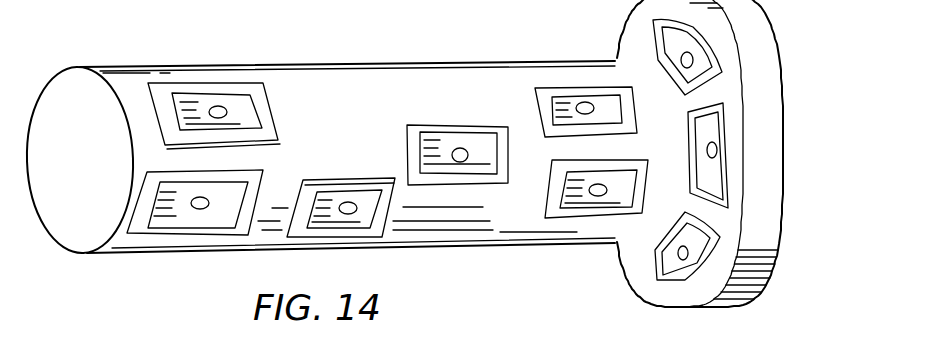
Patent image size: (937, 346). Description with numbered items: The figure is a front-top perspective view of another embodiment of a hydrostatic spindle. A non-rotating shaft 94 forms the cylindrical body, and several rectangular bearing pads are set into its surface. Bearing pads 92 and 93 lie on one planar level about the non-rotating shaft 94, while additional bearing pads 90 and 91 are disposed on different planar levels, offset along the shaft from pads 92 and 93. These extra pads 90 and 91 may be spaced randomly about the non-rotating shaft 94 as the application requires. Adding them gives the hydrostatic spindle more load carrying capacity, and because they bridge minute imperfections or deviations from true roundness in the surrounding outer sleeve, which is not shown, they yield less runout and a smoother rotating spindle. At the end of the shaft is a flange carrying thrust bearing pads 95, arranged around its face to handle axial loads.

The bearing pad 90 is at (342, 190).
The bearing pad 91 is at (470, 128).
The bearing pad 92 is at (175, 128).
The bearing pad 93 is at (560, 190).
The non-rotating shaft 94 is at (343, 80).
The thrust bearing pads 95 is at (673, 261).